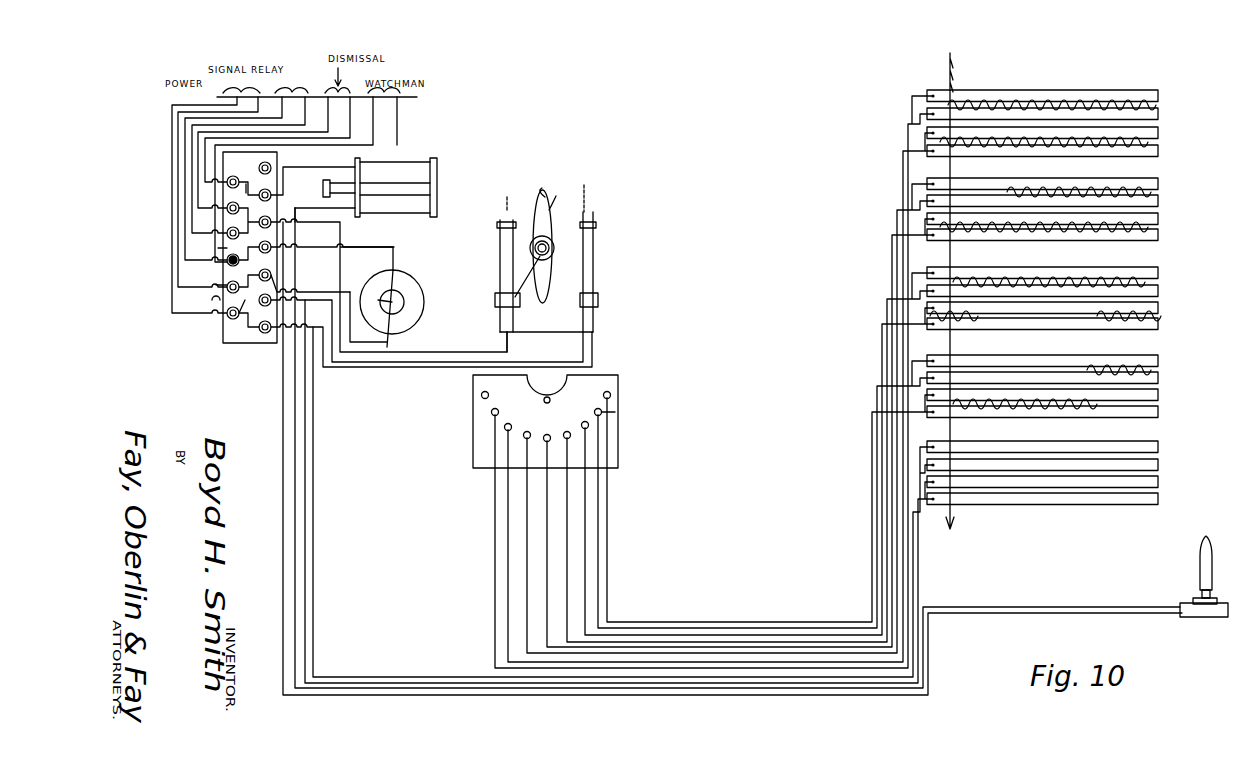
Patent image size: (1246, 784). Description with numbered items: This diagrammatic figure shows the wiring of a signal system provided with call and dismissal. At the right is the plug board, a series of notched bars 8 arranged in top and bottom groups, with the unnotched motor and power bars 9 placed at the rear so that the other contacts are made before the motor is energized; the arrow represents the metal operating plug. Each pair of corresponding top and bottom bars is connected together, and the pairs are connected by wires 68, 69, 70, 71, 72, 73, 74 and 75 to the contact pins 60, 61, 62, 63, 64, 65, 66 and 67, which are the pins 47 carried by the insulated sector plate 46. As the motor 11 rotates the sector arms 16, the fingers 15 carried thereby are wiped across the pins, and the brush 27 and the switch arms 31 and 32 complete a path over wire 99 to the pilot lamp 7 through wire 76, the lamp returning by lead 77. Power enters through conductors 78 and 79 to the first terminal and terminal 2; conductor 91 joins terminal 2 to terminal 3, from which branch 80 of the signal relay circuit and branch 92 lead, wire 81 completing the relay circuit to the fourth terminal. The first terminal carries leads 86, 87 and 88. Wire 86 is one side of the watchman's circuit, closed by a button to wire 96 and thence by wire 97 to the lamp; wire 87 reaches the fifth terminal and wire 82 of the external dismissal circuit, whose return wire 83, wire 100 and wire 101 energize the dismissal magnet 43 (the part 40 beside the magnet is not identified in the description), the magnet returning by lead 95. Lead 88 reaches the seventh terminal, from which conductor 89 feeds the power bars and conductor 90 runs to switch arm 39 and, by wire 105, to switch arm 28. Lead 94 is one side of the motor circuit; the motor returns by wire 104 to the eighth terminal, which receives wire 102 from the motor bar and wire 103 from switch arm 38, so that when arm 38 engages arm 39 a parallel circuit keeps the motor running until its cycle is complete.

The terminal 2 is at (457, 255).
The terminal 3 is at (404, 223).
The pilot lamp 7 is at (1199, 563).
The notched bars 8 is at (1160, 145).
The motor and power bars 9 is at (1160, 485).
The motor 11 is at (392, 300).
The fingers 15 is at (547, 200).
The sector arms 16 is at (549, 210).
The brush 27 is at (548, 273).
The switch arm 28 is at (500, 252).
The switch arm 31 is at (516, 262).
The switch arm 32 is at (504, 196).
The switch arm 38 is at (588, 193).
The switch arm 39 is at (596, 243).
The solenoid plunger 40 is at (338, 183).
The dismissal magnet 43 is at (380, 187).
The insulated sector plate 46 is at (617, 375).
The contact pins 47 is at (598, 412).
The contact pin 60 is at (611, 395).
The contact pin 61 is at (615, 412).
The contact pin 62 is at (589, 426).
The contact pin 63 is at (570, 437).
The contact pin 64 is at (545, 440).
The contact pin 65 is at (525, 437).
The contact pin 66 is at (505, 427).
The contact pin 67 is at (496, 409).
The wire 68 is at (609, 505).
The wire 69 is at (599, 540).
The wire 70 is at (586, 570).
The wire 71 is at (568, 593).
The wire 72 is at (546, 503).
The wire 73 is at (526, 535).
The wire 74 is at (507, 558).
The wire 75 is at (494, 580).
The wire 76 is at (283, 388).
The lead 77 is at (296, 278).
The power line 78 is at (172, 118).
The power line 79 is at (178, 133).
The branch 80 is at (185, 152).
The wire 81 is at (192, 165).
The wire 82 is at (198, 173).
The wire 83 is at (205, 185).
The wire 86 is at (212, 300).
The wire 87 is at (237, 305).
The lead 88 is at (252, 343).
The conductor 89 is at (314, 434).
The conductor 90 is at (373, 362).
The conductor 91 is at (222, 288).
The branch 92 is at (228, 262).
The lead 94 is at (324, 248).
The lead 95 is at (295, 229).
The wire 96 is at (398, 130).
The wire 97 is at (218, 250).
The wire 99 is at (342, 233).
The wire 100 is at (248, 180).
The wire 101 is at (283, 182).
The wire 102 is at (305, 484).
The wire 103 is at (432, 367).
The wire 104 is at (387, 347).
The wire 105 is at (547, 333).